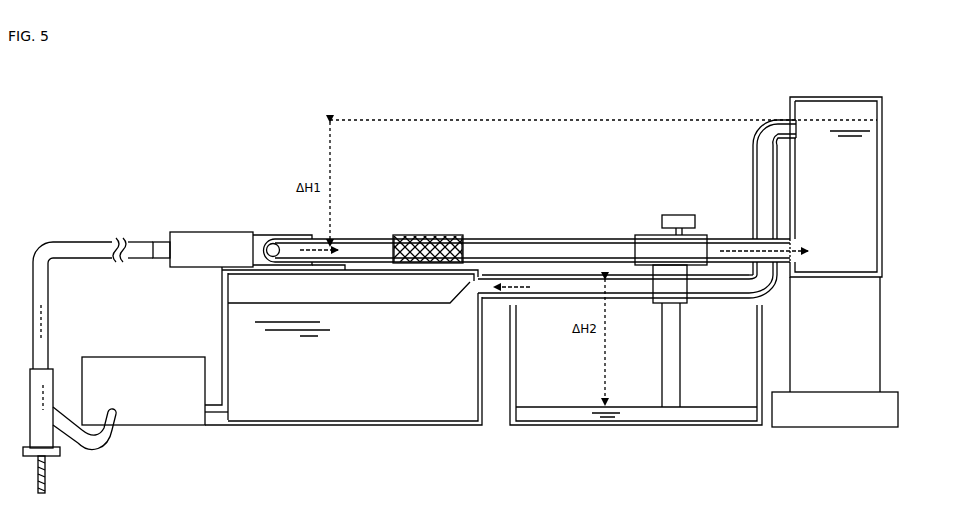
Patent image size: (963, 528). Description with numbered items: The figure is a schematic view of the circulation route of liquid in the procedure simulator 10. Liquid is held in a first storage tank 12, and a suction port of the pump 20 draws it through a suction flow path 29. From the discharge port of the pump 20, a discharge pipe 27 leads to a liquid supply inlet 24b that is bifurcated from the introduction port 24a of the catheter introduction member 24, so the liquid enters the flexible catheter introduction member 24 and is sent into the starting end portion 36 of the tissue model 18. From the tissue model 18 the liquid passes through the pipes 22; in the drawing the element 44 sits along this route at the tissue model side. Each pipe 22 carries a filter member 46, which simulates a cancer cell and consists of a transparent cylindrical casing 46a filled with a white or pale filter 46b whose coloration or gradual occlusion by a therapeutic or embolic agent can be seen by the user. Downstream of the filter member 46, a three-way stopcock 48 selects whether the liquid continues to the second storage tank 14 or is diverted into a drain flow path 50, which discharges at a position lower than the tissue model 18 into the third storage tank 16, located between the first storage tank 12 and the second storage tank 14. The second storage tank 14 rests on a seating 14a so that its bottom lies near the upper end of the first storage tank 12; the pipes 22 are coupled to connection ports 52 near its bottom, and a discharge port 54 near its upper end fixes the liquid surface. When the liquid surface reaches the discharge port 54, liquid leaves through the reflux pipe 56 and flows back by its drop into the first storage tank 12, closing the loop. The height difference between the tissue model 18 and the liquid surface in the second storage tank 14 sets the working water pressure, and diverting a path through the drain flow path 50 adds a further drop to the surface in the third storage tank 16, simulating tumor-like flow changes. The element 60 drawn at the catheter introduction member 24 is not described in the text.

The procedure simulator 10 is at (226, 87).
The first storage tank 12 is at (372, 425).
The second storage tank 14 is at (882, 206).
The seating 14a is at (882, 322).
The third storage tank 16 is at (548, 425).
The tissue model 18 is at (192, 232).
The pump 20 is at (118, 357).
The pipe 22 is at (348, 239).
The catheter introduction member 24 is at (62, 240).
The introduction port 24a is at (60, 377).
The liquid supply inlet 24b is at (68, 432).
The discharge pipe 27 is at (100, 440).
The suction flow path 29 is at (221, 425).
The starting end portion 36 is at (163, 242).
The nozzle 44 is at (268, 240).
The filter member 46 is at (435, 235).
The casing 46a is at (420, 236).
The filter 46b is at (450, 236).
The three-way stopcock 48 is at (698, 240).
The drain flow path 50 is at (682, 380).
The connection port 52 is at (792, 240).
The discharge port 54 is at (798, 128).
The reflux pipe 56 is at (752, 148).
The plunger 60 is at (45, 480).